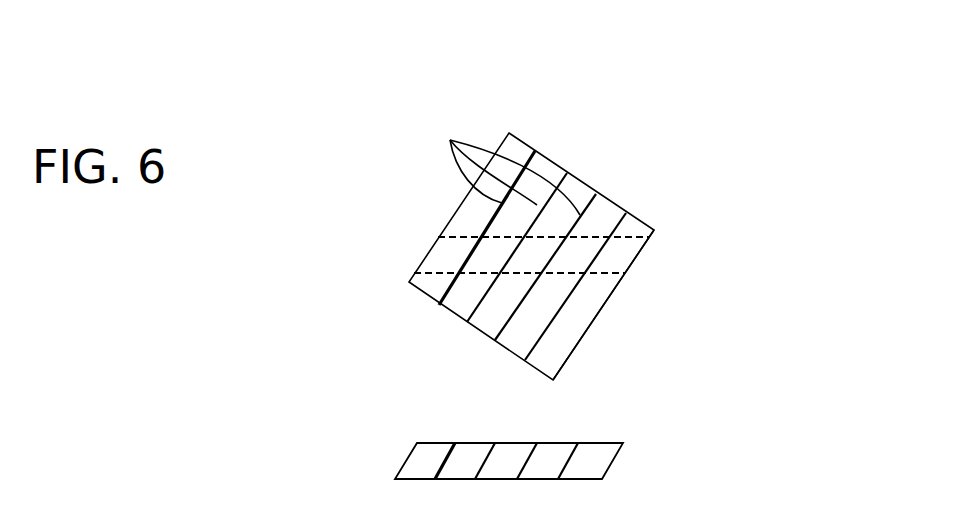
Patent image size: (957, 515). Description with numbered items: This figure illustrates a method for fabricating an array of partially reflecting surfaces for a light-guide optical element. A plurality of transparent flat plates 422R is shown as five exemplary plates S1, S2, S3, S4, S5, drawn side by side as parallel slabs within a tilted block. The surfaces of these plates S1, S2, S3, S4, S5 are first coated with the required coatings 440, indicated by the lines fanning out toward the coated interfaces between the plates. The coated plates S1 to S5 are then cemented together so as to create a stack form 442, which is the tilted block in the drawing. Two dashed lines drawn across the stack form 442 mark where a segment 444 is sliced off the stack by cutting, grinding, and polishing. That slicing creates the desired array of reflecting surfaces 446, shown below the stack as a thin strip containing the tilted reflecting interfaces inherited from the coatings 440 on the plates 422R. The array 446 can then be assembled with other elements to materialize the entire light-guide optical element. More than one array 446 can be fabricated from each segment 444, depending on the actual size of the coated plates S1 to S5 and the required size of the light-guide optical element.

The transparent flat plates 422R is at (593, 202).
The coatings 440 is at (494, 169).
The stack form 442 is at (410, 282).
The segment 444 is at (424, 257).
The array of reflecting surfaces 446 is at (468, 443).
The first plate S1 is at (523, 140).
The second plate S2 is at (553, 160).
The third plate S3 is at (579, 178).
The fourth plate S4 is at (607, 197).
The fifth plate S5 is at (638, 217).